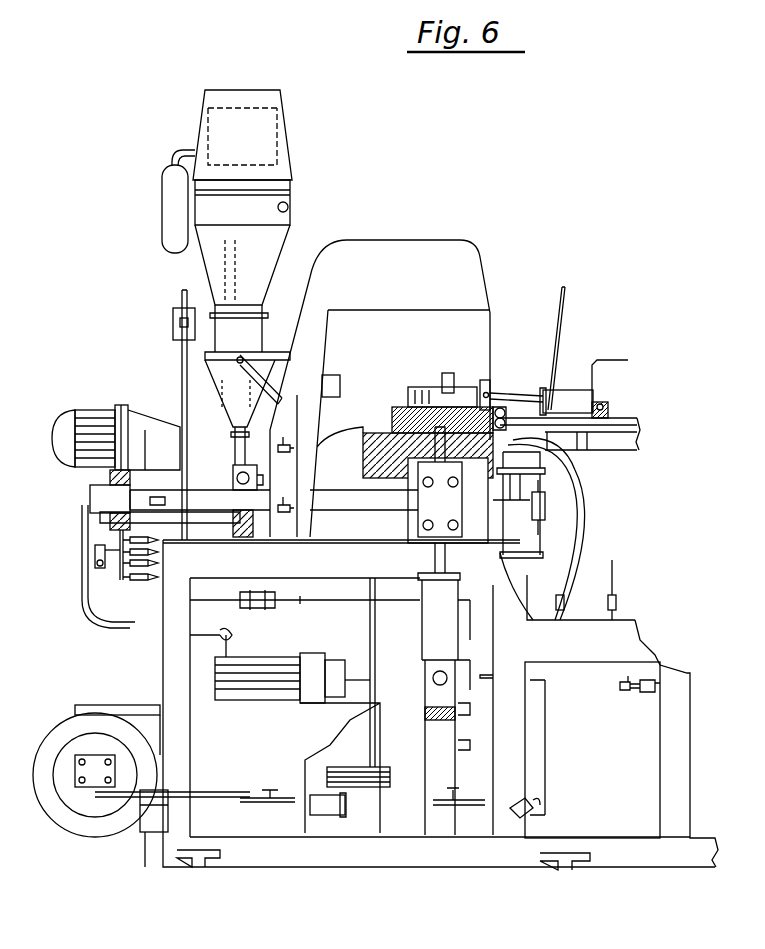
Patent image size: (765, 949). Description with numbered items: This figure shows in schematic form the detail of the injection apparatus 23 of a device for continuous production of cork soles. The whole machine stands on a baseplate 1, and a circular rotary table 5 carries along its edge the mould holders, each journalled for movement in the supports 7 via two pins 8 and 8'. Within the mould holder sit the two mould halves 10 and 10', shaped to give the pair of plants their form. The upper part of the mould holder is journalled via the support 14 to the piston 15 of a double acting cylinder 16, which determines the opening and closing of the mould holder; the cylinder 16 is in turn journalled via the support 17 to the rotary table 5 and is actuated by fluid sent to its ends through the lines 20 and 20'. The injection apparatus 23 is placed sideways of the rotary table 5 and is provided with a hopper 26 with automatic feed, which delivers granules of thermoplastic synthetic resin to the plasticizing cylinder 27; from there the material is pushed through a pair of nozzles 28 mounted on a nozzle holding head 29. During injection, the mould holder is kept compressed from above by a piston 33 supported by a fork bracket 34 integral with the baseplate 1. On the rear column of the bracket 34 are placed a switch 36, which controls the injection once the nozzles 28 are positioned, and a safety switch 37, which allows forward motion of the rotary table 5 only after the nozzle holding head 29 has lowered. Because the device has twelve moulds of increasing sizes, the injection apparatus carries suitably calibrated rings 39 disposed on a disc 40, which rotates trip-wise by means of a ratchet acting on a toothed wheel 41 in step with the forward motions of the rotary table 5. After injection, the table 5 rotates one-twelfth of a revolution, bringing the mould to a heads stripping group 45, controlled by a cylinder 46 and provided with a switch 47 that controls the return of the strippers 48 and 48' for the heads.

The baseplate 1 is at (677, 695).
The rotary table 5 is at (613, 443).
The supports 7 is at (548, 433).
The pin 8 is at (452, 503).
The pin 8' is at (519, 396).
The mould half 10 is at (405, 457).
The mould half 10' is at (519, 382).
The support 14 is at (490, 385).
The piston 15 is at (552, 395).
The double acting cylinder 16 is at (572, 395).
The support 17 is at (608, 412).
The line 20 is at (591, 285).
The line 20' is at (626, 365).
The injection apparatus 23 is at (108, 498).
The hopper 26 is at (240, 388).
The plasticizing cylinder 27 is at (348, 505).
The nozzles 28 is at (420, 407).
The nozzle holding head 29 is at (437, 500).
The piston 33 is at (445, 382).
The fork bracket 34 is at (365, 260).
The switch 36 is at (287, 437).
The safety switch 37 is at (267, 501).
The calibrated rings 39 is at (148, 600).
The disc 40 is at (108, 612).
The toothed wheel 41 is at (95, 555).
The heads stripping group 45 is at (545, 480).
The cylinder 46 is at (520, 520).
The switch 47 is at (545, 508).
The stripper 48 is at (605, 485).
The stripper 48' is at (604, 499).